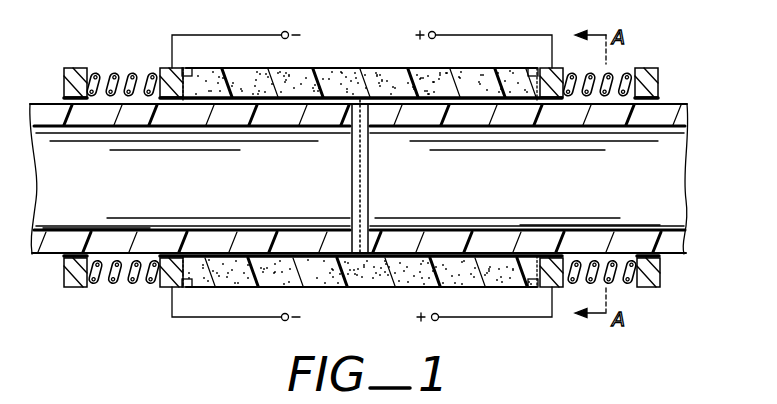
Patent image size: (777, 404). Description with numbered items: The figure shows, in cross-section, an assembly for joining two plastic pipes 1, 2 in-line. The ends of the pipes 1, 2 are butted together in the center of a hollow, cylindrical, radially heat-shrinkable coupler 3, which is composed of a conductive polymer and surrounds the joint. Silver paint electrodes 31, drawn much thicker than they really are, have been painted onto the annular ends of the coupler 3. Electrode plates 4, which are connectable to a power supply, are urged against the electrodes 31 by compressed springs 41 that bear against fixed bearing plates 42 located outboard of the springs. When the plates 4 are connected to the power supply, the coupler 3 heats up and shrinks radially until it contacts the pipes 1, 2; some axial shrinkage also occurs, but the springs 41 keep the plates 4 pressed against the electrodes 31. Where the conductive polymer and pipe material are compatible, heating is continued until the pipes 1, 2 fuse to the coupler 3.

The plastic pipe 1 is at (293, 115).
The plastic pipe 2 is at (425, 115).
The radially heat-shrinkable coupler 3 is at (365, 268).
The electrode plate 4 is at (146, 124).
The silver paint electrode 31 is at (185, 67).
The compressed spring 41 is at (626, 70).
The fixed bearing plate 42 is at (63, 69).